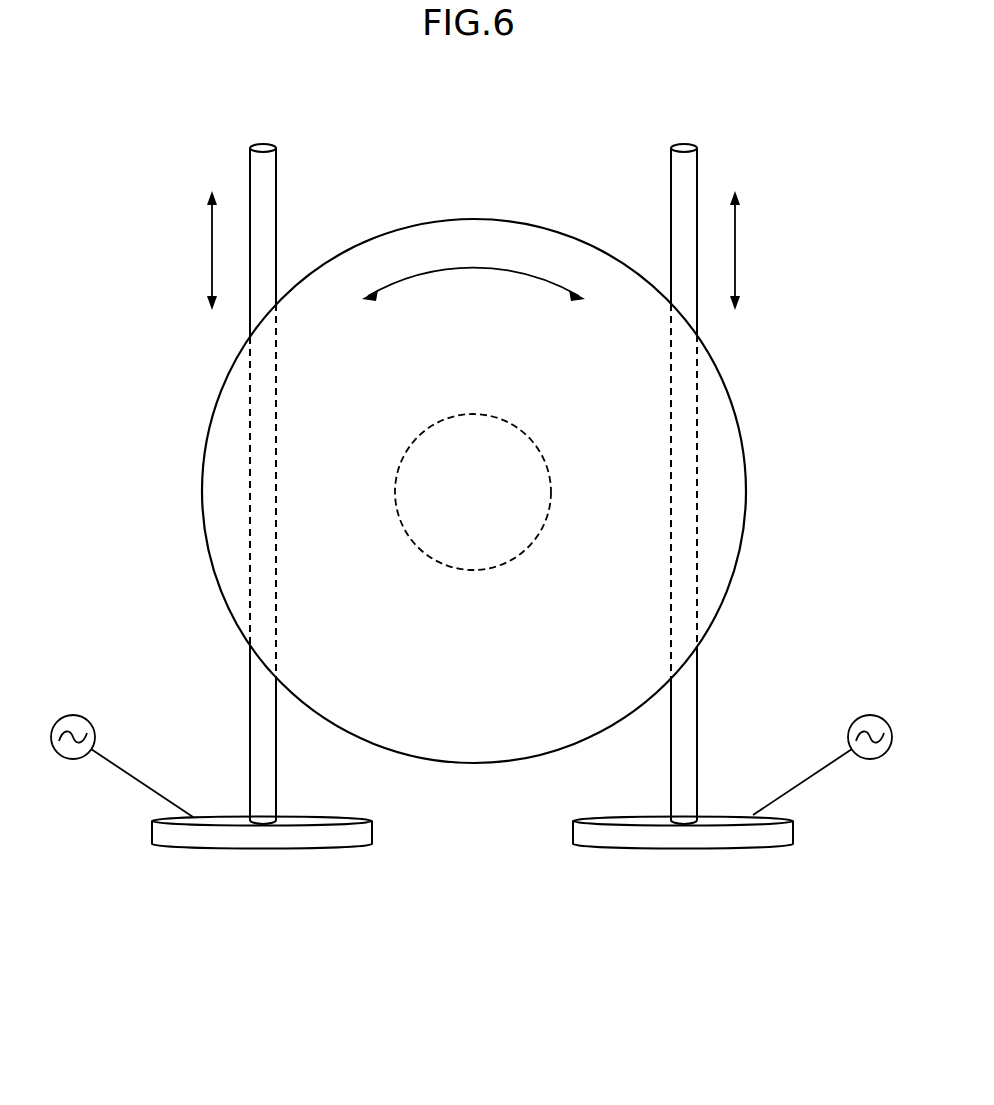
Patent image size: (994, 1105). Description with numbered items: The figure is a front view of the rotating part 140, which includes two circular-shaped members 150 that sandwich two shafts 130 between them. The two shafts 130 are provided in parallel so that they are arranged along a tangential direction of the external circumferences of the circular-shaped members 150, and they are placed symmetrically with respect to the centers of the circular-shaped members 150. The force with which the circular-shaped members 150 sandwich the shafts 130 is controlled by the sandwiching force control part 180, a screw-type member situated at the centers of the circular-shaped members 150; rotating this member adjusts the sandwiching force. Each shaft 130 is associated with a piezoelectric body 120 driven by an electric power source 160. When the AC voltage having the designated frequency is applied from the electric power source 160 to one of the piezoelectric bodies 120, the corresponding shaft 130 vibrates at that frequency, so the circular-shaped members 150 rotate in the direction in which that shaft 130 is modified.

The piezoelectric body 120 is at (317, 848).
The shaft 130 is at (671, 765).
The rotating part 140 is at (474, 433).
The circular-shaped member 150 is at (522, 220).
The electric power source 160 is at (72, 714).
The sandwiching force control part 180 is at (550, 468).